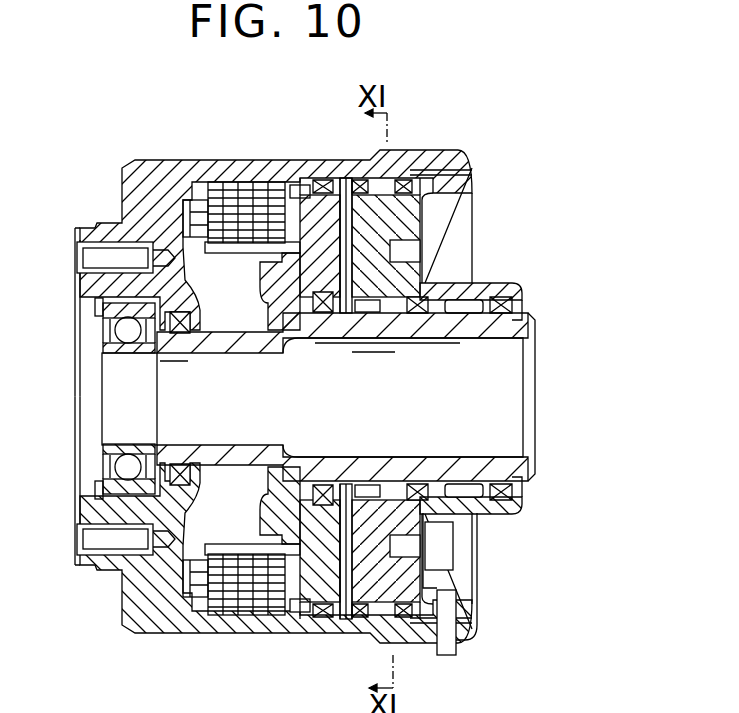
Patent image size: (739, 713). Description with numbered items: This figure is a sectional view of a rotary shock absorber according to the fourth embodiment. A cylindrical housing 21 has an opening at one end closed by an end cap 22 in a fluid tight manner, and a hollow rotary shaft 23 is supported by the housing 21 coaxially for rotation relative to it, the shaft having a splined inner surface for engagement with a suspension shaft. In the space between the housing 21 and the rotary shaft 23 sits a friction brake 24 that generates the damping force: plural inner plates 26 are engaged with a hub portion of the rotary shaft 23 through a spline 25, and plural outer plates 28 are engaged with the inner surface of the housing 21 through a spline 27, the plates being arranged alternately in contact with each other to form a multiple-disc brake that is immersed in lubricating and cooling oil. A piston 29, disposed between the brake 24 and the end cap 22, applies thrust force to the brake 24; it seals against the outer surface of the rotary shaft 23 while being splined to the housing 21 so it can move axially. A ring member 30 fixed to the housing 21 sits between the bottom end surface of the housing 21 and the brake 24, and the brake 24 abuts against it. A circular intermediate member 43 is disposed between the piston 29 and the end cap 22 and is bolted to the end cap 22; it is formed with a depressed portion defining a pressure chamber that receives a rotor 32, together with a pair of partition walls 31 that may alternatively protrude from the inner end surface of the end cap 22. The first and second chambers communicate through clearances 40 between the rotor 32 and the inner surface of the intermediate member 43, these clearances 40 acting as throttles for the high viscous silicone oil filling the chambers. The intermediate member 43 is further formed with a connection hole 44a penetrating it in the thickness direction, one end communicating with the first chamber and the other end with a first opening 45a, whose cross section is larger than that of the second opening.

The cylindrical housing 21 is at (270, 631).
The end cap 22 is at (413, 587).
The hollow rotary shaft 23 is at (523, 323).
The friction brake 24 is at (233, 178).
The spline 25 is at (183, 245).
The inner plates 26 is at (195, 197).
The spline 27 is at (300, 193).
The outer plates 28 is at (265, 192).
The piston 29 is at (320, 613).
The ring member 30 is at (186, 598).
The partition walls 31 is at (430, 531).
The rotor 32 is at (355, 235).
The clearances 40 is at (355, 545).
The circular intermediate member 43 is at (423, 278).
The connection hole 44a is at (450, 197).
The first opening 45a is at (430, 228).